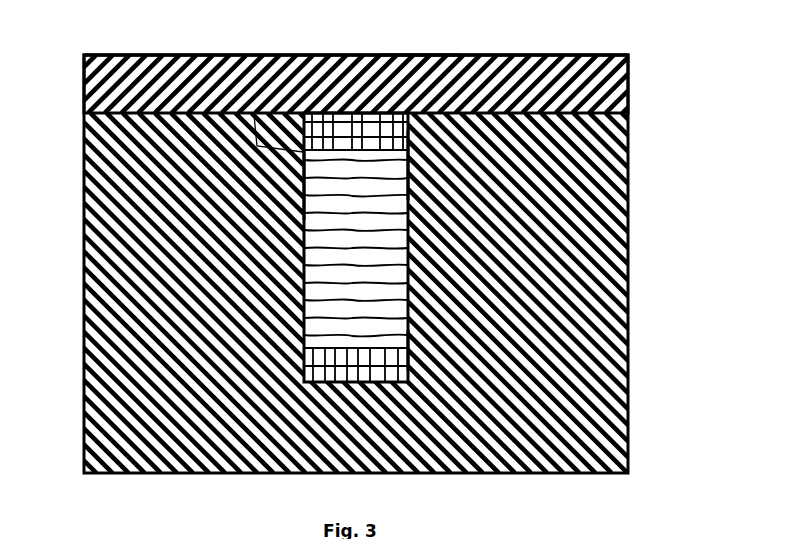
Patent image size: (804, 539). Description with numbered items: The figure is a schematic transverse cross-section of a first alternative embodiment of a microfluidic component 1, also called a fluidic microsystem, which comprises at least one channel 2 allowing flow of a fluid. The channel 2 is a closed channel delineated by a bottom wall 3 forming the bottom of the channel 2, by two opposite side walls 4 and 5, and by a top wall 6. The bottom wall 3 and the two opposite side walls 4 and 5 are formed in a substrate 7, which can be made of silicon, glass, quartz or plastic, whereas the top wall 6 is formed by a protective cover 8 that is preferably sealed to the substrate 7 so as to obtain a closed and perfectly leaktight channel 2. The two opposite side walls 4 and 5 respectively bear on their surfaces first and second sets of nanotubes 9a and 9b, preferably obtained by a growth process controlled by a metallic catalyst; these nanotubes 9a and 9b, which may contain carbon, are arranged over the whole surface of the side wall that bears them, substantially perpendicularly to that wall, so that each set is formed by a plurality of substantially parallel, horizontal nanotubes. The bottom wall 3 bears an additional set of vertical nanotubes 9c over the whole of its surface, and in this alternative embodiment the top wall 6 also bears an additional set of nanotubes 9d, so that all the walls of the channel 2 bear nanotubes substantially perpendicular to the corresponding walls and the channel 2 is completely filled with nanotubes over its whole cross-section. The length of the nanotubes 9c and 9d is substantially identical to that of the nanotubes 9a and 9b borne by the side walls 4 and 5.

The microfluidic component 1 is at (697, 235).
The channel 2 is at (352, 310).
The bottom wall 3 is at (388, 382).
The side wall 4 is at (246, 55).
The side wall 5 is at (410, 175).
The top wall 6 is at (357, 112).
The substrate 7 is at (598, 411).
The protective cover 8 is at (127, 54).
The first set of nanotubes 9a is at (304, 186).
The second set of nanotubes 9b is at (408, 152).
The additional set of nanotubes 9c is at (408, 353).
The additional set of nanotubes 9d is at (413, 54).